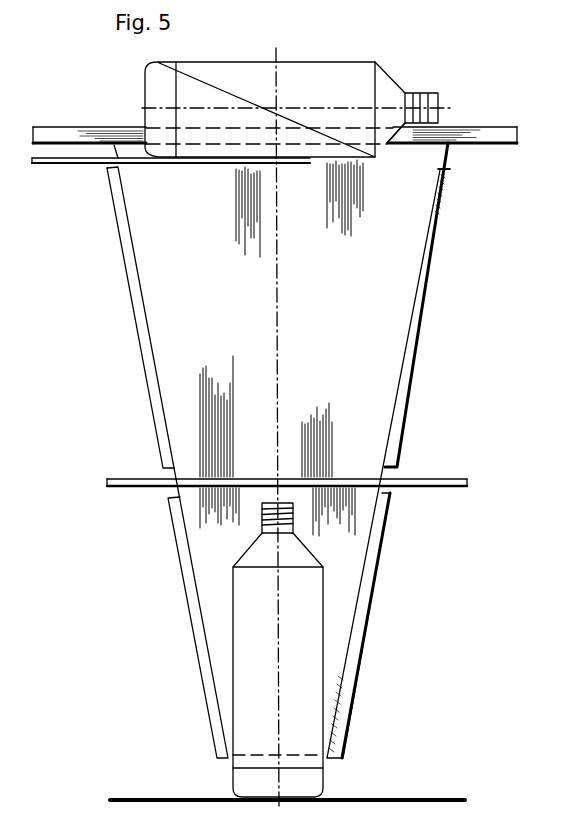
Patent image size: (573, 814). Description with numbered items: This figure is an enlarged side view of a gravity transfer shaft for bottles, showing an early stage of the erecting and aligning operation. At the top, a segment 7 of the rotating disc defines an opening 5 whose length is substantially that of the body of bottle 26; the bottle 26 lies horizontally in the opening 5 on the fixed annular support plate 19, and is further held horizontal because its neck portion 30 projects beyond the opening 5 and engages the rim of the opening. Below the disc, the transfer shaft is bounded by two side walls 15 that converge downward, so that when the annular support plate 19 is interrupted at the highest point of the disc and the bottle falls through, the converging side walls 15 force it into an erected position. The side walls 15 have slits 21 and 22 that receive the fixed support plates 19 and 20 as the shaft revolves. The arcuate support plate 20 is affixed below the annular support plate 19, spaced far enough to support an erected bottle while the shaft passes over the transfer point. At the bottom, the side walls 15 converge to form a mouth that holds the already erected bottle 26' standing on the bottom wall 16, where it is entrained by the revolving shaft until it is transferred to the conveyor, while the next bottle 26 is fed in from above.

The opening 5 is at (410, 147).
The segment 7 is at (482, 128).
The side wall 15 is at (428, 288).
The bottom wall 16 is at (400, 797).
The annular support plate 19 is at (65, 162).
The support plate 20 is at (135, 490).
The slit 21 is at (404, 468).
The slit 22 is at (452, 152).
The bottle 26 is at (275, 92).
The bottle 26' is at (321, 650).
The neck portion 30 is at (432, 98).